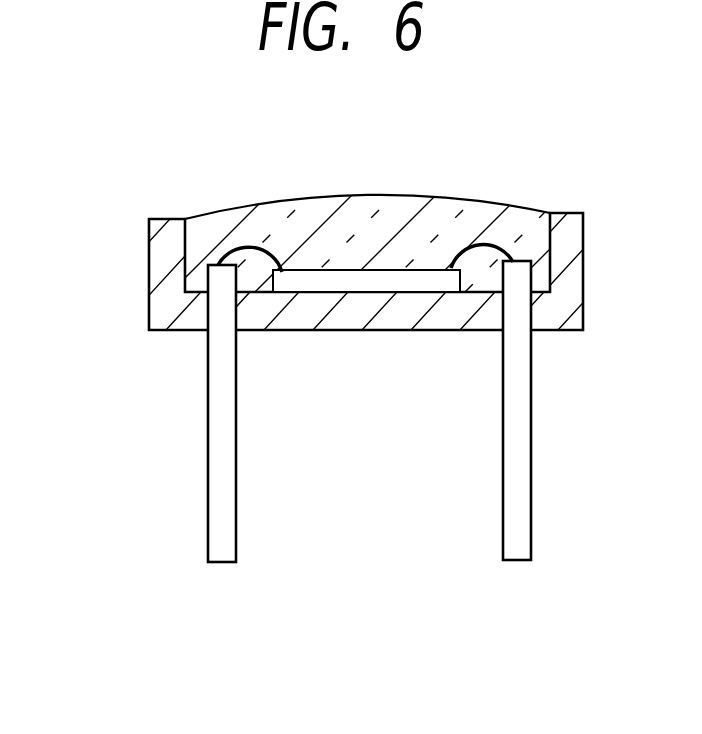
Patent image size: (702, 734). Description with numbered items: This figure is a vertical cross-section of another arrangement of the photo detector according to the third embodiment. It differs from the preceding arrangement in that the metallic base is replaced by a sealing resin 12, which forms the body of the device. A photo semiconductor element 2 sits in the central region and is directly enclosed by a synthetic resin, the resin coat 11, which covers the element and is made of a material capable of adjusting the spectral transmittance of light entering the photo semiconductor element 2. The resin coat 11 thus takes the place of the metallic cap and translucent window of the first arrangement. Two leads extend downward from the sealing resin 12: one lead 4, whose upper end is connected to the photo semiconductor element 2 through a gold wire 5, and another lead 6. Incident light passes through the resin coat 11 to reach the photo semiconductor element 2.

The sealing resin 12 is at (160, 312).
The resin coat 11 is at (334, 205).
The gold wire 5 is at (228, 245).
The photo semiconductor element 2 is at (352, 278).
The lead 6 is at (215, 457).
The lead 4 is at (523, 465).